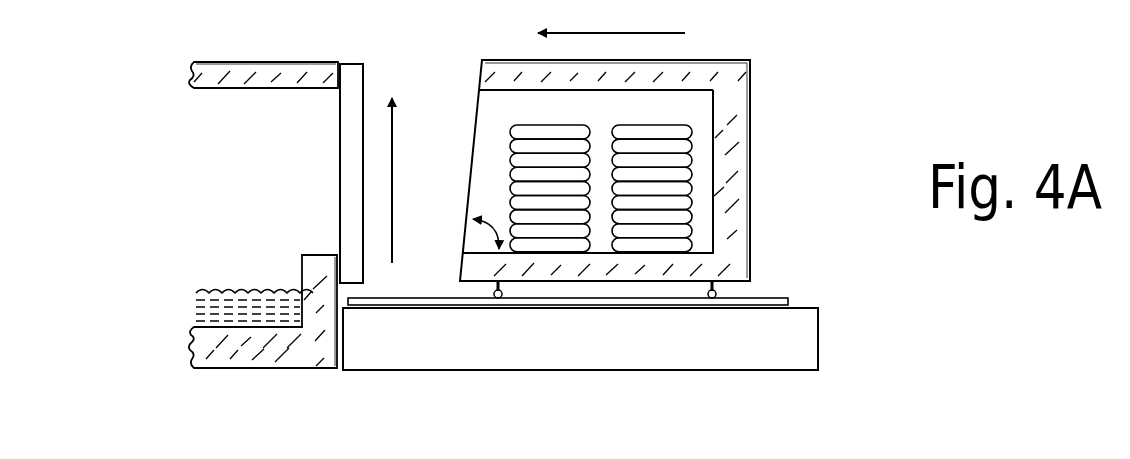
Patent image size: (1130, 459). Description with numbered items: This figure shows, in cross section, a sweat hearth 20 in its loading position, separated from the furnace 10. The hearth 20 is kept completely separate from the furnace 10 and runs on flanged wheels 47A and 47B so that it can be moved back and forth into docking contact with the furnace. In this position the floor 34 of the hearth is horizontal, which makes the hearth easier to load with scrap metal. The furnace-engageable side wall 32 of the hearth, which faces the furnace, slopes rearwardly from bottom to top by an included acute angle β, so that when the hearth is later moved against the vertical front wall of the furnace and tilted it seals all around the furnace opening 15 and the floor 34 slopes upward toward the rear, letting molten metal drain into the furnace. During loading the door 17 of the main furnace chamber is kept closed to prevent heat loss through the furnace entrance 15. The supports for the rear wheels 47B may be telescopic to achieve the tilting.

The furnace 10 is at (297, 38).
The main furnace entrance 15 is at (318, 255).
The door 17 is at (340, 194).
The sweat hearth 20 is at (782, 144).
The furnace-engageable side wall 32 is at (480, 77).
The floor 34 is at (708, 250).
The flanged wheels 47A is at (488, 306).
The rear wheels 47B is at (708, 306).